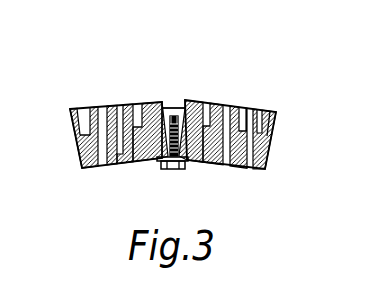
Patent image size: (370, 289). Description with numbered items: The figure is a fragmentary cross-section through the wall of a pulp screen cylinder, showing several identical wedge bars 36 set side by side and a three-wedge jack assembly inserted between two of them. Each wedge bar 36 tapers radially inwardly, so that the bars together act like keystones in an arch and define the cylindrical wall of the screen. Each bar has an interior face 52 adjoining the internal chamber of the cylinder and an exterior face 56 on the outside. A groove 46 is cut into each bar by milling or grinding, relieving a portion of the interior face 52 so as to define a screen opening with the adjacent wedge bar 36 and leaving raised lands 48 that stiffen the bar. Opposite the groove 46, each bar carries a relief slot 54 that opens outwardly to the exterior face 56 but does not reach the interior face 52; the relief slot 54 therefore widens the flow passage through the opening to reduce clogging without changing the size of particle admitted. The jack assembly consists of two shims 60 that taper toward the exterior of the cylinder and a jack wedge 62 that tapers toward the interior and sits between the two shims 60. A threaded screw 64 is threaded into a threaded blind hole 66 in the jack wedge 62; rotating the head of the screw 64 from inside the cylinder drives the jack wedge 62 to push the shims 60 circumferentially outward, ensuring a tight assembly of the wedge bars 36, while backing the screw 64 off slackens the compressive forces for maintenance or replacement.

The wedge bar 36 is at (277, 112).
The groove 46 is at (127, 162).
The raised land 48 is at (85, 107).
The interior face 52 is at (113, 164).
The relief slot 54 is at (105, 105).
The exterior face 56 is at (251, 108).
The shim 60 is at (159, 102).
The jack wedge 62 is at (176, 107).
The threaded screw 64 is at (175, 170).
The threaded blind hole 66 is at (197, 161).